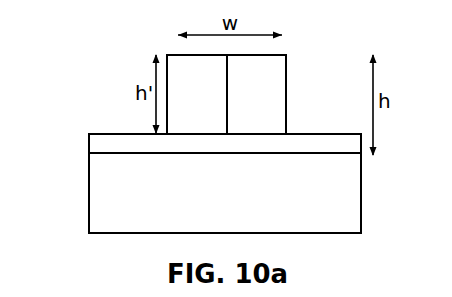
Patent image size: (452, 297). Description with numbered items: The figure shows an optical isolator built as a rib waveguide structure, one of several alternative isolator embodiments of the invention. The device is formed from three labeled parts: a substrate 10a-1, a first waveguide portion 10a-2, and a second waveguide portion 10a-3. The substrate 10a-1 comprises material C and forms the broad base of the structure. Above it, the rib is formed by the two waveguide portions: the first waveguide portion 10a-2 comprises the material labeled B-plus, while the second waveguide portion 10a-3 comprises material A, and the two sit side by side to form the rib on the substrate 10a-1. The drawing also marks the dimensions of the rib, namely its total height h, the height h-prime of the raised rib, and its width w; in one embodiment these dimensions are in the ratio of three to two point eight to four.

The substrate 10a-1 is at (83, 210).
The first waveguide portion 10a-2 is at (288, 75).
The second waveguide portion 10a-3 is at (130, 126).